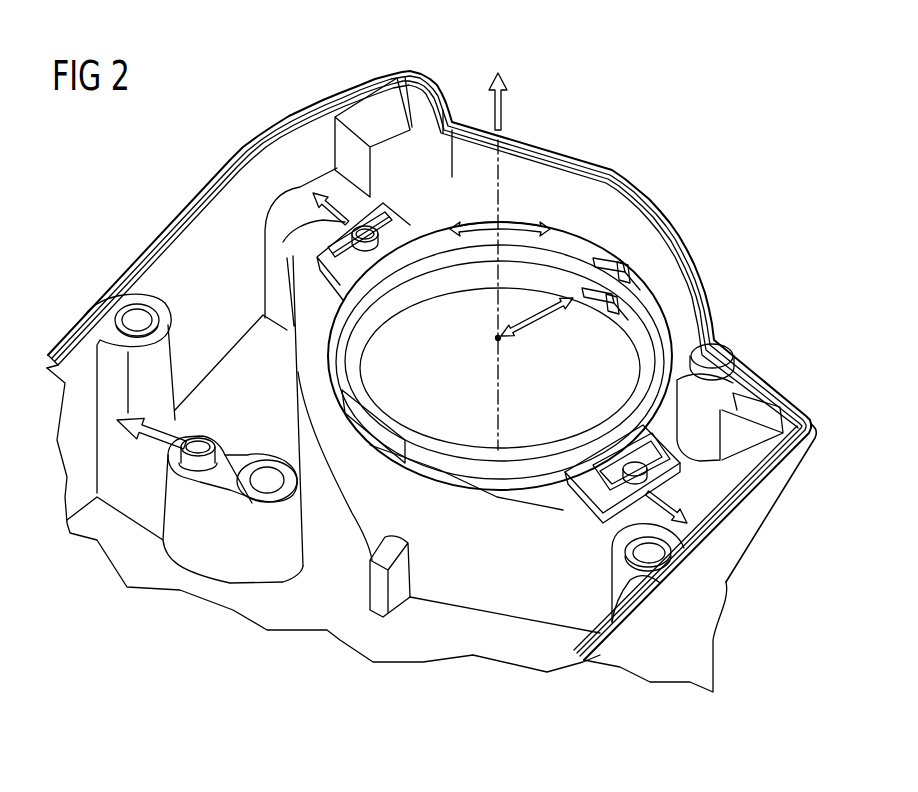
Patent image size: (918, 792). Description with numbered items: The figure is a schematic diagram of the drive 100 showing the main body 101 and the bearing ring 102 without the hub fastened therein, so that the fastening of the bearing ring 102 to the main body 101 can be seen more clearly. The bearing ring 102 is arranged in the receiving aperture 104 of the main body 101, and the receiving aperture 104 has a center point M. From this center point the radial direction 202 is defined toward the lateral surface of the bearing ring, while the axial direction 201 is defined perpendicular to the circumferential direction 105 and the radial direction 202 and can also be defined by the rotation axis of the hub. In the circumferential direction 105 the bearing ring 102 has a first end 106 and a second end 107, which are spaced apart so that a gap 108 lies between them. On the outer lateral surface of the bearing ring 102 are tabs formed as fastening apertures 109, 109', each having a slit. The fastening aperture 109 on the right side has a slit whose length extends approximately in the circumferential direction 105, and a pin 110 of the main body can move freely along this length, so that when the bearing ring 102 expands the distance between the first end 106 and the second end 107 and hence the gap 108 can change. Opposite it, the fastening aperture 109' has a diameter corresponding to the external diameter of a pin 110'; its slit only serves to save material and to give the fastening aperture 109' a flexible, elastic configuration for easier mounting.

The drive 100 is at (719, 220).
The main body 101 is at (755, 530).
The bearing ring 102 is at (657, 310).
The receiving aperture 104 is at (455, 339).
The circumferential direction 105 is at (503, 217).
The first end 106 is at (632, 272).
The second end 107 is at (610, 250).
The gap 108 is at (620, 260).
The fastening aperture 109 is at (603, 489).
The fastening aperture 109' is at (308, 251).
The pin 110 is at (606, 434).
The pin 110' is at (390, 200).
The axial direction 201 is at (503, 113).
The radial direction 202 is at (315, 190).
The center point M is at (498, 340).